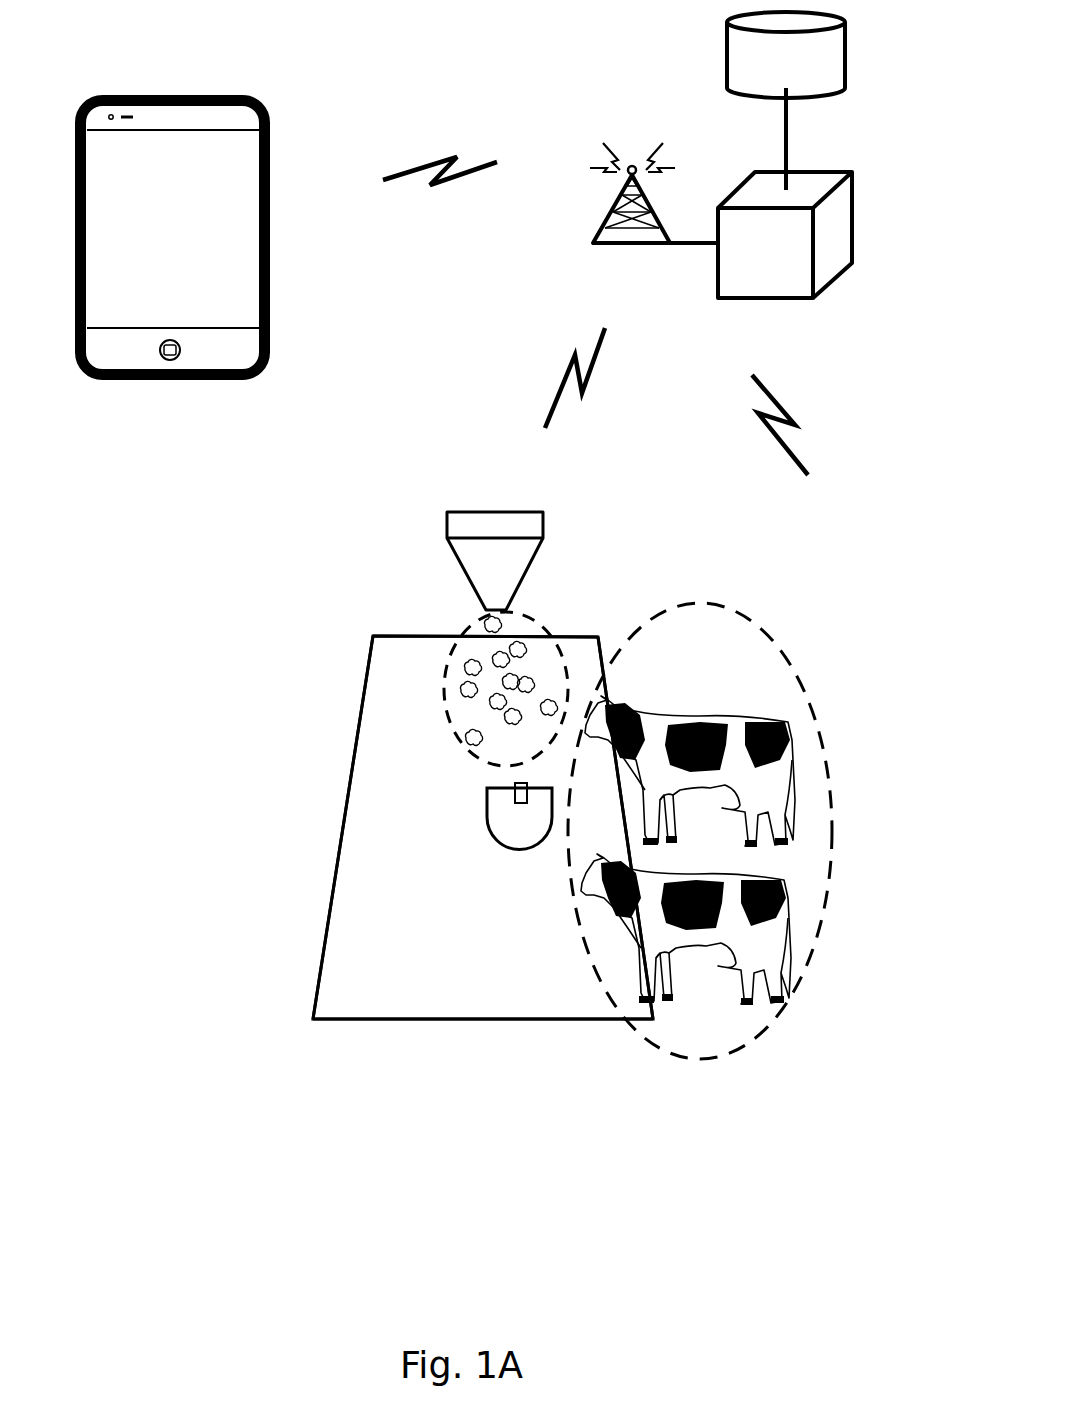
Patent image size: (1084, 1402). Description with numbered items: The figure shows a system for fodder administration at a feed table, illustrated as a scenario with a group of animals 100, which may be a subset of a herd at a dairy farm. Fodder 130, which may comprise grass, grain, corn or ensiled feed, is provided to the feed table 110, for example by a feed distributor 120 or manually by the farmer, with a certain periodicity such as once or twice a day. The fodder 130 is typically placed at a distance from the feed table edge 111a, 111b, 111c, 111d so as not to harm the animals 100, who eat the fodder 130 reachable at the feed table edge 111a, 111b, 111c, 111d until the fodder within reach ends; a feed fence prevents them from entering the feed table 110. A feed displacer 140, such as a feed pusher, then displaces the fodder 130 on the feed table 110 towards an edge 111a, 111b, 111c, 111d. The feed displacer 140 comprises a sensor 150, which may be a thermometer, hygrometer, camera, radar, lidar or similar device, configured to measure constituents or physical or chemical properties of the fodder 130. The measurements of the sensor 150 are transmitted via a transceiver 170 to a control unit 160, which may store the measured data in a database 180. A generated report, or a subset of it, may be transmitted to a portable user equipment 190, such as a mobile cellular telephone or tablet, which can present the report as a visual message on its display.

The group of animals 100 is at (802, 687).
The feed table 110 is at (387, 883).
The feed table edge 111a is at (317, 978).
The feed table edge 111b is at (340, 1023).
The feed table edge 111c is at (655, 1008).
The feed table edge 111d is at (413, 633).
The feed distributor 120 is at (457, 523).
The fodder 130 is at (470, 627).
The feed displacer 140 is at (517, 832).
The sensor 150 is at (517, 787).
The control unit 160 is at (790, 265).
The transceiver 170 is at (633, 167).
The database 180 is at (823, 55).
The portable user equipment 190 is at (237, 250).